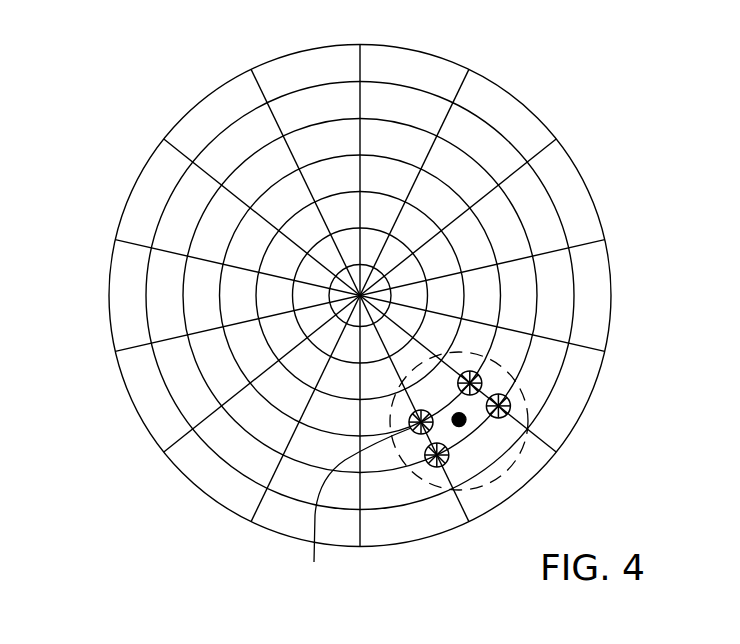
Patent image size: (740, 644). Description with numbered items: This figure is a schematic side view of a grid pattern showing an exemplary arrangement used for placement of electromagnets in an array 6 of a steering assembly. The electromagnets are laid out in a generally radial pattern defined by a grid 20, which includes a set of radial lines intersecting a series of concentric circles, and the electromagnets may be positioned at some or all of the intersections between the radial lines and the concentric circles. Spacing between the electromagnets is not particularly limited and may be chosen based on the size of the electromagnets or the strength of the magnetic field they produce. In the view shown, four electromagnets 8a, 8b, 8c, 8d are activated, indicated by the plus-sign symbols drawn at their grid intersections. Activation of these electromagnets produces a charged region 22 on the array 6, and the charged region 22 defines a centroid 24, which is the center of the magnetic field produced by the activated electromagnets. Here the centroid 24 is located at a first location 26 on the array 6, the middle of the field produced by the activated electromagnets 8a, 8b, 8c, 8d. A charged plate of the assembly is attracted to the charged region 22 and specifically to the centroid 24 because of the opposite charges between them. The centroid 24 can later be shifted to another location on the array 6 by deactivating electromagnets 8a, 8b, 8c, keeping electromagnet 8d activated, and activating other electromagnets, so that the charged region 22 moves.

The array 6 is at (336, 296).
The grid 20 is at (574, 213).
The charged region 22 is at (356, 511).
The centroid 24 is at (479, 426).
The first location 26 is at (524, 460).
The electromagnet 8a is at (430, 467).
The electromagnet 8b is at (511, 402).
The electromagnet 8c is at (508, 496).
The electromagnet 8d is at (484, 379).